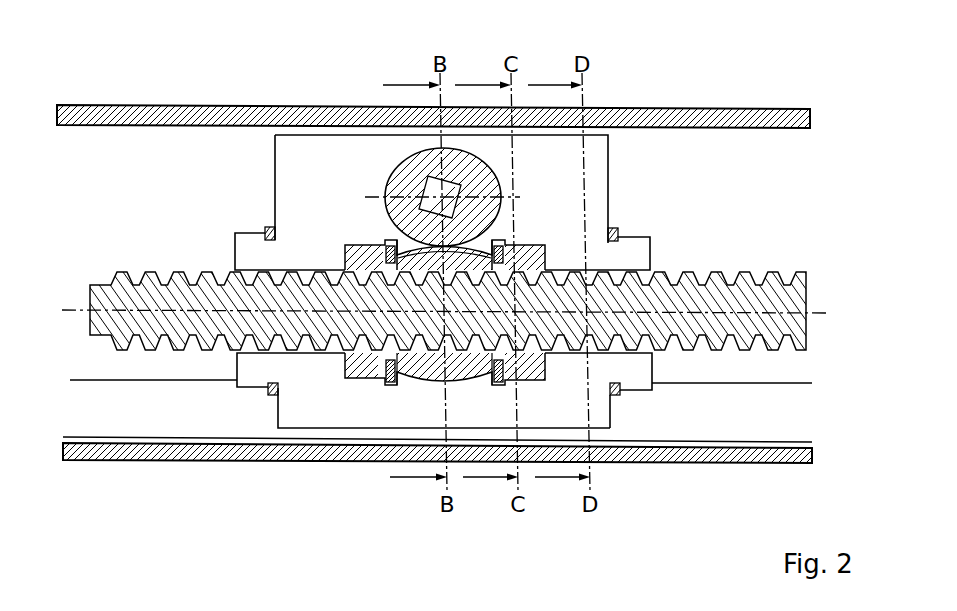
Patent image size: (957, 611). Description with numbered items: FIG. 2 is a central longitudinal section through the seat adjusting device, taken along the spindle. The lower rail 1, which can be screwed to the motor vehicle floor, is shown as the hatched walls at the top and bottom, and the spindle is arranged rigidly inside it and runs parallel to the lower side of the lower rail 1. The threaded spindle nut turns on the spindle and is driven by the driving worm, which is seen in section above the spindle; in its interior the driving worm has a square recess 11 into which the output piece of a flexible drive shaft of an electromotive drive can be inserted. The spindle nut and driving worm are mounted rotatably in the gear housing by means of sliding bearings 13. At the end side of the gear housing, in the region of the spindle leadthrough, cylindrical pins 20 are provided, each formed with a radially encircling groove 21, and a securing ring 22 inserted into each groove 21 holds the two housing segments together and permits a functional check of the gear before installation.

The lower rail 1 is at (210, 462).
The square recess 11 is at (437, 192).
The sliding bearing 13 is at (367, 378).
The cylindrical pin 20 is at (637, 391).
The groove 21 is at (618, 385).
The securing ring 22 is at (617, 396).